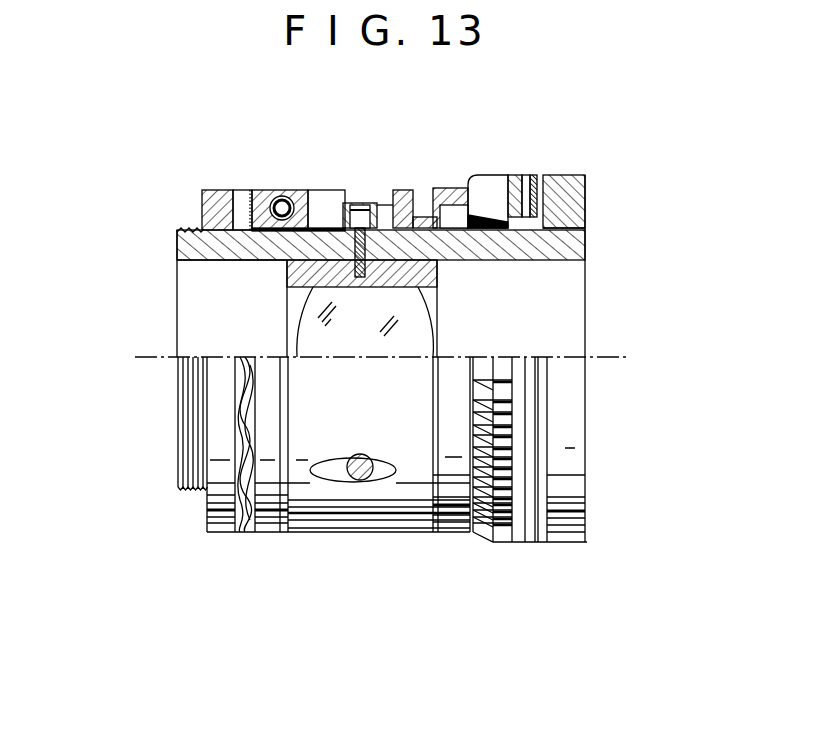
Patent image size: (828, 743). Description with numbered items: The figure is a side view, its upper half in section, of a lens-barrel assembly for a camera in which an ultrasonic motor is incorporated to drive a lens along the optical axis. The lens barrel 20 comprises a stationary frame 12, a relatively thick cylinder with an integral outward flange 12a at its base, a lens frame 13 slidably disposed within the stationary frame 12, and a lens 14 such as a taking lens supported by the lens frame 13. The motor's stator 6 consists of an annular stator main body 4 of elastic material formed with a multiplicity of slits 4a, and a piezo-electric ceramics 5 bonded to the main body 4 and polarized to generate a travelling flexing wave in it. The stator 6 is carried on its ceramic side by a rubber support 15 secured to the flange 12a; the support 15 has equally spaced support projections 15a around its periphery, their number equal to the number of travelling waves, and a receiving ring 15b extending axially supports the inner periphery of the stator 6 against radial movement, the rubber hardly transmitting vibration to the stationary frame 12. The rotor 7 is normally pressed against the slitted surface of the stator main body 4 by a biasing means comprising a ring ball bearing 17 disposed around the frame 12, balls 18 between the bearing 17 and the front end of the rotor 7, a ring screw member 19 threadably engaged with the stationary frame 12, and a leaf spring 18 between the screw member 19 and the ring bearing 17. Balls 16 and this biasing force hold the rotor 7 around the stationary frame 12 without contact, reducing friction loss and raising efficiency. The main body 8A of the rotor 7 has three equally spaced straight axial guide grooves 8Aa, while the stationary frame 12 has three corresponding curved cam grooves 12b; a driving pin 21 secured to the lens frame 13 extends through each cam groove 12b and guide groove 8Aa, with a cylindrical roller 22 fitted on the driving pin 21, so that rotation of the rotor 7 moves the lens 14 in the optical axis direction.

The stator main body 4 is at (513, 190).
The slits 4a is at (480, 193).
The piezo-electric ceramics 5 is at (525, 187).
The stator 6 is at (497, 548).
The rotor 7 is at (353, 536).
The main body of the rotor 8A is at (313, 500).
The guide grooves 8Aa is at (320, 210).
The stationary frame 12 is at (580, 250).
The flange 12a is at (585, 187).
The cam grooves 12b is at (437, 265).
The lens frame 13 is at (287, 275).
The lens 14 is at (315, 342).
The support 15 is at (553, 183).
The support projections 15a is at (533, 187).
The receiving ring 15b is at (585, 227).
The balls 16 is at (283, 200).
The ring ball bearing 17 is at (262, 190).
The balls / leaf spring 18 is at (240, 200).
The ring screw member 19 is at (207, 207).
The lens barrel 20 is at (165, 312).
The driving pin 21 is at (357, 203).
The cylindrical roller 22 is at (383, 207).